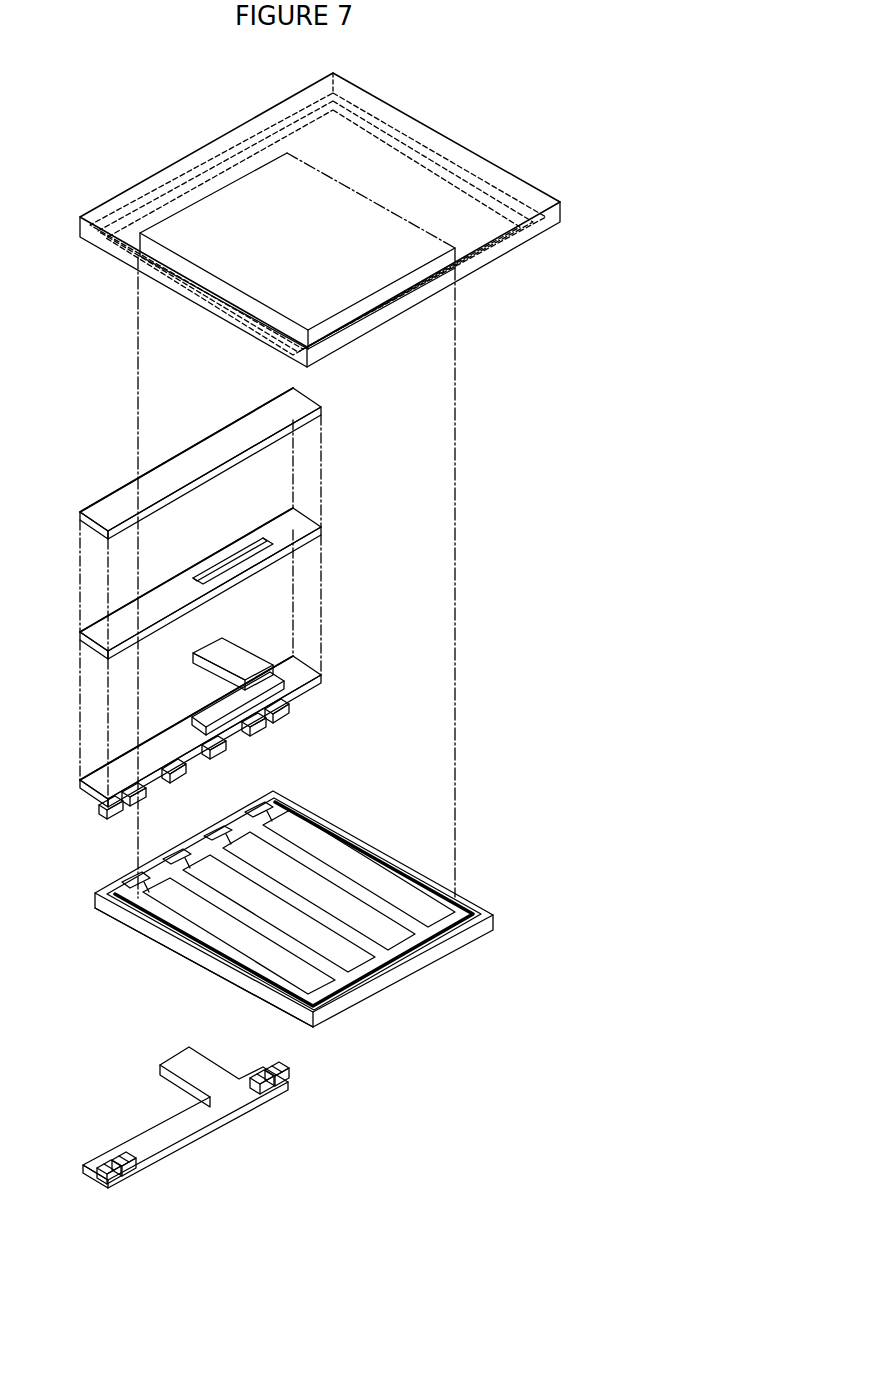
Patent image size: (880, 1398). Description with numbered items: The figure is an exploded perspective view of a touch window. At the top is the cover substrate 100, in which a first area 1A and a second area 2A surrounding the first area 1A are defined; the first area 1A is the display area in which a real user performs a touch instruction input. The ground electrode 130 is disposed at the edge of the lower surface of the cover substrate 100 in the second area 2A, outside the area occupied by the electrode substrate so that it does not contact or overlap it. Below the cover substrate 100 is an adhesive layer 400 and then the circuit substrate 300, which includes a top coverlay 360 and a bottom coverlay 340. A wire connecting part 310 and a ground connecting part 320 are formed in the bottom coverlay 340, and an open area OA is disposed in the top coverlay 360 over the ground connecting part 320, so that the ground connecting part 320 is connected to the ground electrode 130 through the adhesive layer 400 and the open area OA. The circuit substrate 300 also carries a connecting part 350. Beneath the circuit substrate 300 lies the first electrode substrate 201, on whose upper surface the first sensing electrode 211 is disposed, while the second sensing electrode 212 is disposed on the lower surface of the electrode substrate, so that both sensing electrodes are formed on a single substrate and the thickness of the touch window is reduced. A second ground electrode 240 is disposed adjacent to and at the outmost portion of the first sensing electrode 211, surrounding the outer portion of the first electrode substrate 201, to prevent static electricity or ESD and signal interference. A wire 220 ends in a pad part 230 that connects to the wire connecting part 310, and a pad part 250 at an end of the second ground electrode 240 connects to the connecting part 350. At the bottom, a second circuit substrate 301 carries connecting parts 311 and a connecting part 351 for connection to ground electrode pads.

The cover substrate 100 is at (437, 143).
The ground electrode 130 is at (182, 297).
The first area 1A is at (313, 250).
The second area 2A is at (408, 193).
The adhesive layer 400 is at (110, 492).
The circuit substrate 300 is at (264, 660).
The top coverlay 360 is at (240, 577).
The open area OA is at (232, 562).
The ground connecting part 320 is at (267, 680).
The bottom coverlay 340 is at (310, 672).
The connecting part 350 is at (278, 715).
The wire connecting part 310 is at (138, 790).
The first electrode substrate 201 is at (453, 943).
The wire 220 is at (275, 805).
The second ground electrode 240 is at (347, 842).
The first sensing electrode 211 is at (390, 880).
The pad part 230 is at (250, 800).
The pad part 250 is at (110, 885).
The second sensing electrode 212 is at (390, 993).
The second circuit substrate 301 is at (183, 1058).
The connection terminals 311 is at (128, 1175).
The connecting part 351 is at (115, 1187).